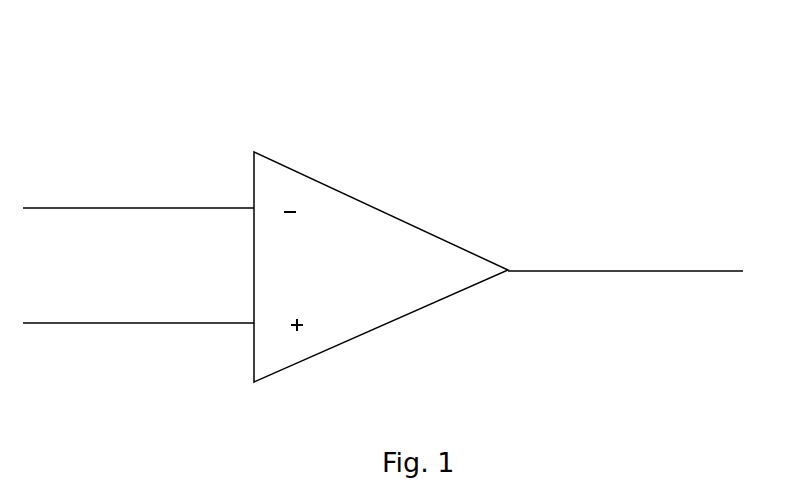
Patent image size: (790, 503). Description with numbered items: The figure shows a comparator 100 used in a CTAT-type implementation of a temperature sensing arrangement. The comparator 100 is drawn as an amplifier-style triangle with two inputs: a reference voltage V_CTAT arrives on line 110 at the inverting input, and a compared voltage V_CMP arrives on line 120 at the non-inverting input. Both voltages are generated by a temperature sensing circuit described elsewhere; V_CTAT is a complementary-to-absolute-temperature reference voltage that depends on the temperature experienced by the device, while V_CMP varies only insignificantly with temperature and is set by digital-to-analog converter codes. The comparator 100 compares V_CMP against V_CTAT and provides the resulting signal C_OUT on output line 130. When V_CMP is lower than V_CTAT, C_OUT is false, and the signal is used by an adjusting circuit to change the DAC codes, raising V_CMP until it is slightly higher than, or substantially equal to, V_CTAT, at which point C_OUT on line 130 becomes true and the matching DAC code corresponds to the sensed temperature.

The comparator 100 is at (630, 34).
The line 110 is at (140, 207).
The line 120 is at (140, 322).
The line 130 is at (556, 270).